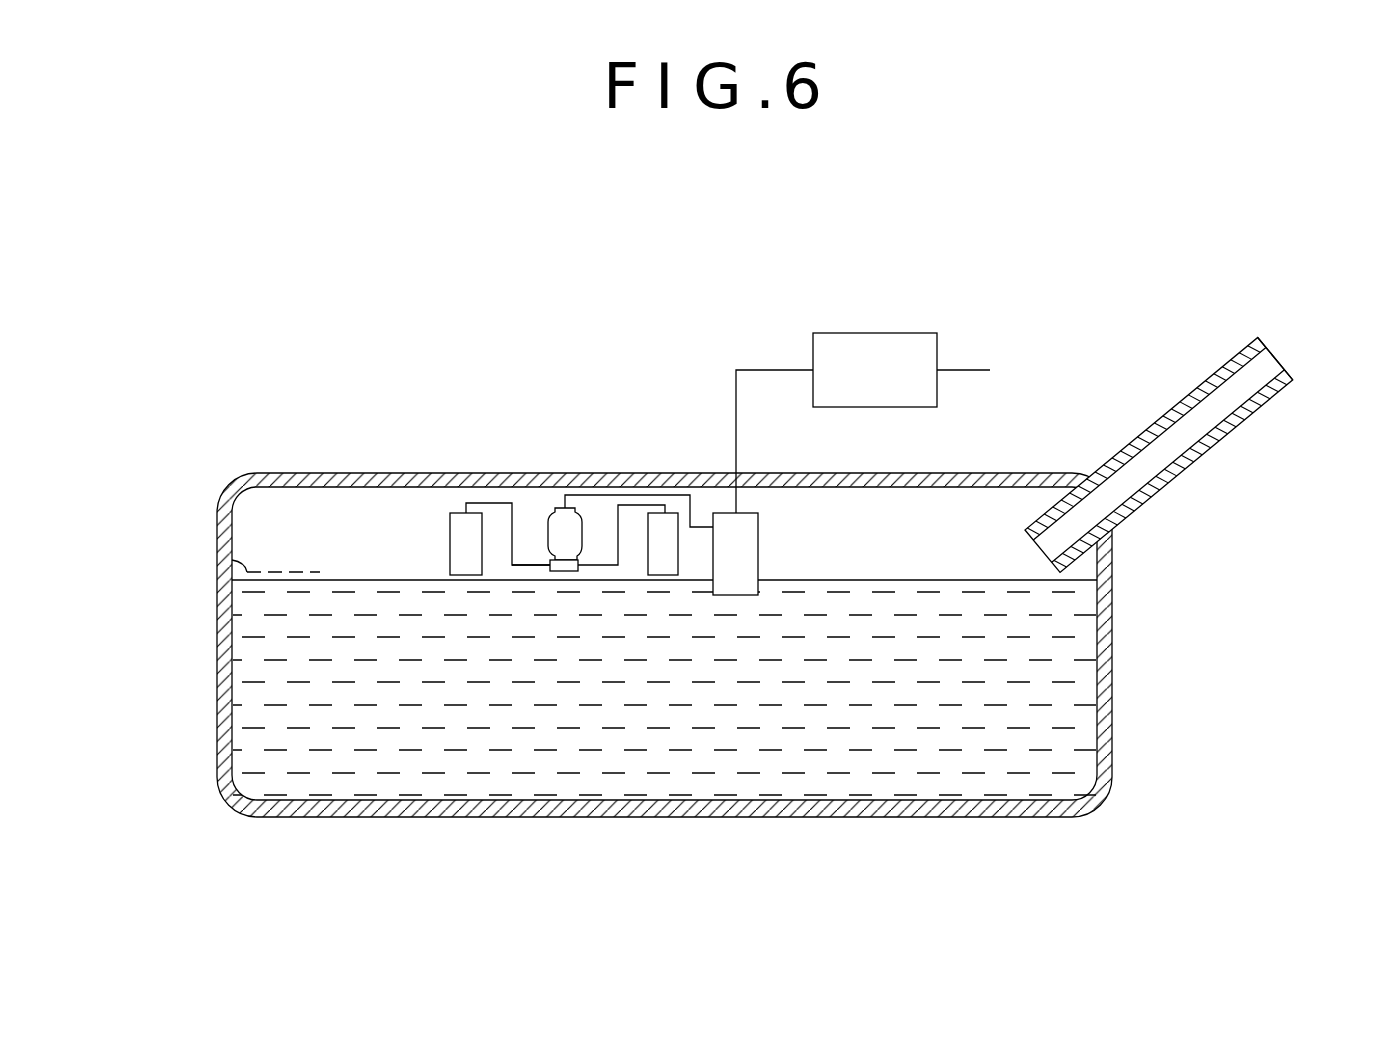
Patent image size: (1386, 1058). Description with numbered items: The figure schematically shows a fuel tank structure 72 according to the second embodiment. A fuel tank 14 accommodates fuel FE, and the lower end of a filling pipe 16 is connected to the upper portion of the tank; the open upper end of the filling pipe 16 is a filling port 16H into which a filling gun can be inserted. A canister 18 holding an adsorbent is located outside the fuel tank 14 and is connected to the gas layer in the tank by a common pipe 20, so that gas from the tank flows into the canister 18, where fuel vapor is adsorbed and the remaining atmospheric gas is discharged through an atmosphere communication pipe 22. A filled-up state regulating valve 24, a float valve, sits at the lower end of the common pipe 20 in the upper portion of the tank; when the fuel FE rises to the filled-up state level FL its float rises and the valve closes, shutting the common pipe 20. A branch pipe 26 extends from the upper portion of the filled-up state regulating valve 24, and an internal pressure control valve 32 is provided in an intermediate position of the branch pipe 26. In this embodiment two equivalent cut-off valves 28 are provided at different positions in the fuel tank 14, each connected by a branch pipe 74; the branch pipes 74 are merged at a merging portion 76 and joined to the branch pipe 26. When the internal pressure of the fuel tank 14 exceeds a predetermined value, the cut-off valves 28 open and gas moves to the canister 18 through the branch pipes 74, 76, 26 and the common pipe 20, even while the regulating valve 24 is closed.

The fuel tank structure 72 is at (316, 368).
The fuel tank 14 is at (236, 482).
The filling pipe 16 is at (1217, 456).
The filling port 16H is at (1288, 368).
The canister 18 is at (874, 333).
The common pipe 20 is at (737, 393).
The atmosphere communication pipe 22 is at (965, 368).
The filled-up state regulating valve 24 is at (758, 548).
The branch pipe 26 is at (620, 497).
The cut-off valve 28 is at (450, 546).
The internal pressure control valve 32 is at (556, 514).
The branch pipes 74 is at (487, 503).
The merging portion 76 is at (550, 562).
The fuel FE is at (1070, 692).
The filled-up state level FL is at (225, 562).